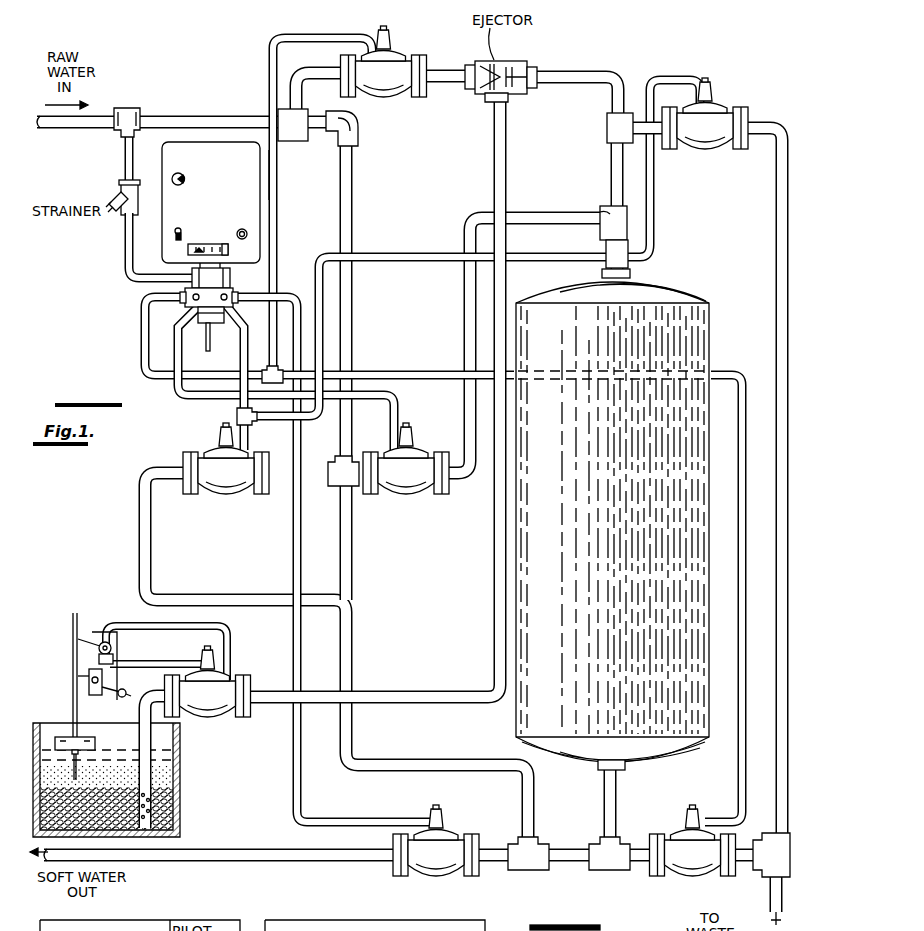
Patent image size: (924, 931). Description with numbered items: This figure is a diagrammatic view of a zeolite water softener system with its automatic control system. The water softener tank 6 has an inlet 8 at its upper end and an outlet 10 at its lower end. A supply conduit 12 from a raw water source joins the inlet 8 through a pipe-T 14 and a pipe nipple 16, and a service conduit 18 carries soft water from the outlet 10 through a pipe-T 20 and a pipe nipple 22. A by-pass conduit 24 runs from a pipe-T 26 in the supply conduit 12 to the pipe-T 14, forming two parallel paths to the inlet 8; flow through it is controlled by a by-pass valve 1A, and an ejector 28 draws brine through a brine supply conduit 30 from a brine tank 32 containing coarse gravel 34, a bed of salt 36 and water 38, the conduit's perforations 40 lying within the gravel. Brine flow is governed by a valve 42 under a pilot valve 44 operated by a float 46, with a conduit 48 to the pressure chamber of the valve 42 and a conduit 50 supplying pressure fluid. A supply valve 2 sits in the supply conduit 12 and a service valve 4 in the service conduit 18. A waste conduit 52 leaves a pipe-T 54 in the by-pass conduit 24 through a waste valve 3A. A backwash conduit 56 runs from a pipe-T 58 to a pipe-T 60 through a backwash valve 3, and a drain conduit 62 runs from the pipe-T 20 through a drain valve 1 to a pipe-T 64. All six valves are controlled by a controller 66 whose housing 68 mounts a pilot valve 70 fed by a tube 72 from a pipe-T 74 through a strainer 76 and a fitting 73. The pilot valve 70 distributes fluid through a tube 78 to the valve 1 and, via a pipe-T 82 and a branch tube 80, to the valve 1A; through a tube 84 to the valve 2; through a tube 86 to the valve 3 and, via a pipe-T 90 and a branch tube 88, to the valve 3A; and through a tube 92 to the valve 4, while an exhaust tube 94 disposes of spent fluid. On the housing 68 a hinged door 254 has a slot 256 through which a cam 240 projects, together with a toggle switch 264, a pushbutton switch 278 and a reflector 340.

The drain valve 1 is at (656, 838).
The by-pass valve 1A is at (394, 60).
The supply valve 2 is at (394, 490).
The backwash valve 3 is at (226, 491).
The waste valve 3A is at (722, 106).
The service valve 4 is at (452, 840).
The water softener tank 6 is at (609, 506).
The inlet 8 is at (630, 274).
The outlet 10 is at (626, 766).
The supply conduit 12 is at (204, 117).
The pipe-T 14 is at (605, 212).
The pipe nipple 16 is at (605, 247).
The service conduit 18 is at (260, 856).
The pipe-T 20 is at (609, 869).
The pipe nipple 22 is at (606, 814).
The by-pass conduit 24 is at (577, 70).
The pipe-T 26 is at (291, 140).
The ejector 28 is at (518, 62).
The brine supply conduit 30 is at (508, 138).
The brine tank 32 is at (178, 772).
The coarse gravel 34 is at (172, 822).
The bed of salt 36 is at (162, 758).
The water 38 is at (160, 748).
The perforations 40 is at (155, 805).
The brine valve 42 is at (228, 709).
The pilot valve 44 is at (118, 650).
The float 46 is at (66, 737).
The conduit 48 is at (150, 663).
The conduit 50 is at (237, 638).
The waste conduit 52 is at (774, 219).
The pipe-T 54 is at (607, 127).
The backwash conduit 56 is at (324, 592).
The pipe-T 58 is at (338, 487).
The pipe-T 60 is at (516, 869).
The drain conduit 62 is at (762, 876).
The pipe-T 64 is at (764, 845).
The controller 66 is at (213, 200).
The housing 68 is at (165, 190).
The pilot valve 70 is at (233, 289).
The tube 72 is at (136, 282).
The fitting 73 is at (198, 268).
The pipe-T 74 is at (133, 111).
The strainer 76 is at (120, 185).
The tube 78 is at (146, 320).
The branch tube 80 is at (276, 198).
The pipe-T 82 is at (266, 368).
The tube 84 is at (172, 390).
The tube 86 is at (220, 330).
The branch tube 88 is at (405, 252).
The pipe-T 90 is at (251, 422).
The tube 92 is at (296, 297).
The exhaust tube 94 is at (206, 330).
The cam 240 is at (228, 249).
The door 254 is at (276, 174).
The slot 256 is at (206, 243).
The toggle switch 264 is at (176, 228).
The pushbutton switch 278 is at (248, 233).
The reflector 340 is at (185, 178).